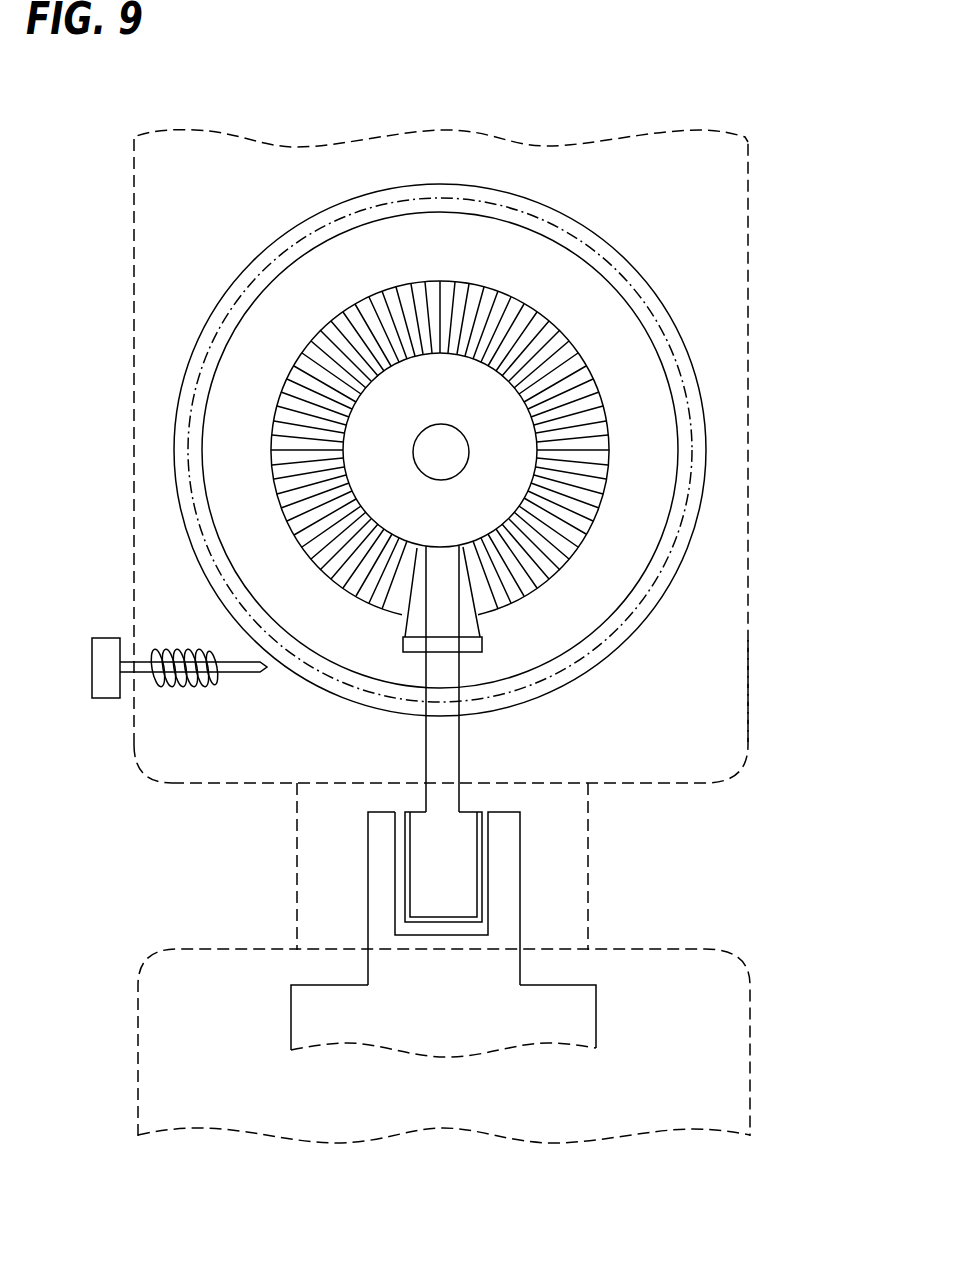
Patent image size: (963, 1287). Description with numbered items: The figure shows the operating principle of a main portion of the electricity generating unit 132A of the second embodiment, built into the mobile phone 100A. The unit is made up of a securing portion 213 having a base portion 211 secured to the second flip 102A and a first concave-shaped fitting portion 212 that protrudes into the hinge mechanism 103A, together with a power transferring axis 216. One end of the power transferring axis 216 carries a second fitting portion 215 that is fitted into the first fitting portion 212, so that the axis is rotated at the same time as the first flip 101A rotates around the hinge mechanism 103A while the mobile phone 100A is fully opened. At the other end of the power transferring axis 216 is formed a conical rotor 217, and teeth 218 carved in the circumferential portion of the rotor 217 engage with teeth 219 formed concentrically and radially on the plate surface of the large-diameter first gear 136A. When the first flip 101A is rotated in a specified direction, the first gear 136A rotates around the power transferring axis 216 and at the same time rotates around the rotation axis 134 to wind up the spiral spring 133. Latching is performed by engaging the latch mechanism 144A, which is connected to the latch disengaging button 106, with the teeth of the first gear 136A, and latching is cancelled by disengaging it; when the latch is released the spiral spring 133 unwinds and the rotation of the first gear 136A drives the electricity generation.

The mobile phone 100A is at (788, 331).
The first flip 101A is at (750, 212).
The second flip 102A is at (752, 1040).
The hinge mechanism 103A is at (592, 868).
The latch disengaging button 106 is at (105, 638).
The latch mechanism 144A is at (245, 673).
The electricity generating unit 132A is at (725, 710).
The spiral spring 133 is at (605, 313).
The rotation axis 134 is at (462, 431).
The first gear 136A is at (586, 228).
The teeth 219 is at (447, 295).
The conical rotor 217 is at (388, 599).
The teeth 218 is at (415, 625).
The power transferring axis 216 is at (452, 755).
The second fitting portion 215 is at (465, 855).
The first concave-shaped fitting portion 212 is at (382, 883).
The base portion 211 is at (320, 1003).
The securing portion 213 is at (238, 855).